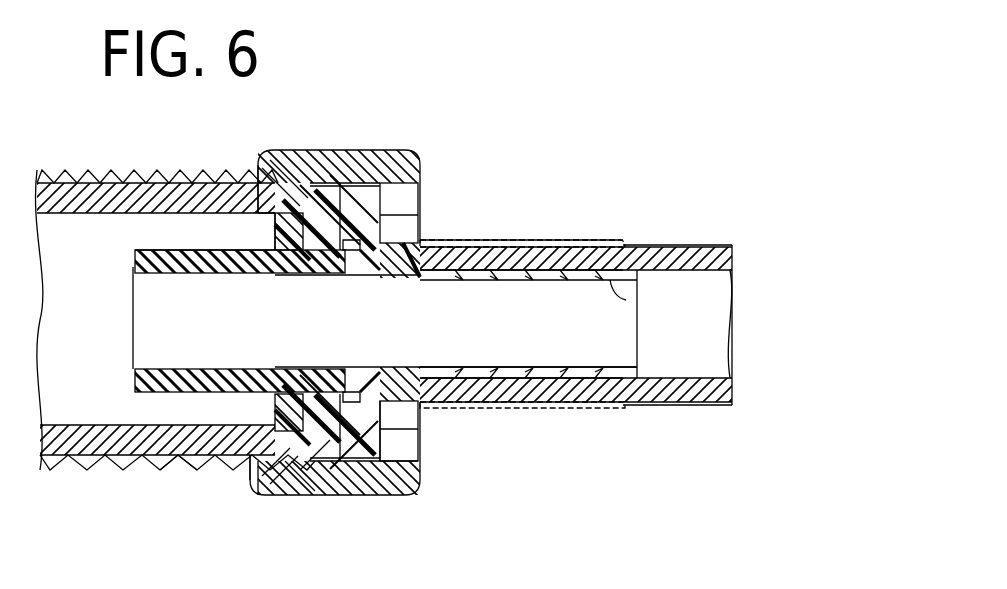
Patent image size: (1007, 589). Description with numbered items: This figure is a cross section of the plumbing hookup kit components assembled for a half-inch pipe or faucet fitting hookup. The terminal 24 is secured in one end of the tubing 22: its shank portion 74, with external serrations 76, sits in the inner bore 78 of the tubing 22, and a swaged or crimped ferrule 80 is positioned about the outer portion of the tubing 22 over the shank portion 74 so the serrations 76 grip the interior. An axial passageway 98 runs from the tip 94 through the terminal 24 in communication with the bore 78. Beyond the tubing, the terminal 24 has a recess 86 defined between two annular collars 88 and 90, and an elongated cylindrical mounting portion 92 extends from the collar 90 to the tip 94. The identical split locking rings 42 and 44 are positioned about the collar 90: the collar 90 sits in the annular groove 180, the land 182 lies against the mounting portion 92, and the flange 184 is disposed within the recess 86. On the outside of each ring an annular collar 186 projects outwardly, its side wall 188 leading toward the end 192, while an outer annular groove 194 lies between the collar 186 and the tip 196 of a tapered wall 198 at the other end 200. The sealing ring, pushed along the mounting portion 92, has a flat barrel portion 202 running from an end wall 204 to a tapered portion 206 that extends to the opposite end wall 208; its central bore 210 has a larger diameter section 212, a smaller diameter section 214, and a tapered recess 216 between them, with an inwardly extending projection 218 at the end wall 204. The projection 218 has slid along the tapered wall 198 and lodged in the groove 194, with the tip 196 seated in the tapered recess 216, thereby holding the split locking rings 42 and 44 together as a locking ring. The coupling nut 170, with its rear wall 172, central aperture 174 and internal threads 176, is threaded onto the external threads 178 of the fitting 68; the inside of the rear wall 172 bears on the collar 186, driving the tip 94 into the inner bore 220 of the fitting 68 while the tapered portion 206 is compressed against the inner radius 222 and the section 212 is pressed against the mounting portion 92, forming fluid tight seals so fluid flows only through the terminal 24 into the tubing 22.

The tubing 22 is at (693, 250).
The terminal 24 is at (437, 221).
The split locking ring 42 is at (292, 280).
The split locking ring 44 is at (402, 367).
The fitting 68 is at (92, 182).
The shank portion 74 is at (630, 272).
The serrations 76 is at (540, 240).
The inner bore 78 is at (727, 296).
The ferrule 80 is at (590, 242).
The recess 86 is at (378, 372).
The collar 88 is at (428, 388).
The collar 90 is at (353, 378).
The mounting portion 92 is at (237, 247).
The tip 94 is at (138, 255).
The axial passageway 98 is at (628, 303).
The coupling nut 170 is at (253, 497).
The rear wall 172 is at (420, 455).
The central aperture 174 is at (420, 425).
The internal threads 176 is at (287, 497).
The external threads 178 is at (187, 473).
The annular groove 180 is at (350, 275).
The land 182 is at (384, 262).
The flange 184 is at (313, 275).
The collar 186 is at (368, 200).
The side wall 188 is at (385, 195).
The end 192 is at (420, 278).
The outer annular groove 194 is at (342, 215).
The tip 196 is at (320, 215).
The tapered wall 198 is at (320, 190).
The end 200 is at (262, 172).
The barrel portion 202 is at (350, 497).
The end wall 204 is at (378, 487).
The tapered portion 206 is at (303, 497).
The end wall 208 is at (273, 402).
The central bore 210 is at (273, 371).
The larger diameter section 212 is at (298, 367).
The smaller diameter section 214 is at (333, 380).
The tapered recess 216 is at (315, 380).
The projection 218 is at (327, 497).
The inner bore 220 is at (273, 220).
The inner radius 222 is at (300, 195).